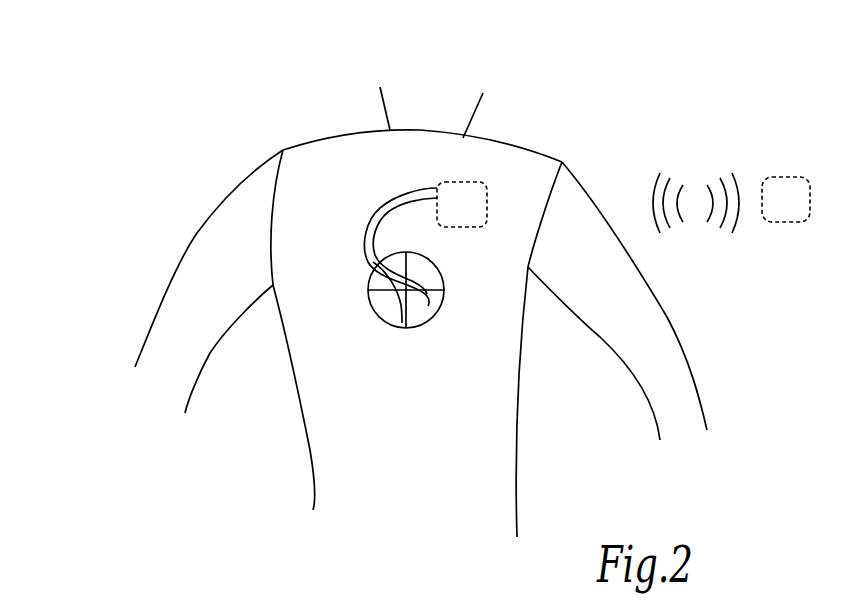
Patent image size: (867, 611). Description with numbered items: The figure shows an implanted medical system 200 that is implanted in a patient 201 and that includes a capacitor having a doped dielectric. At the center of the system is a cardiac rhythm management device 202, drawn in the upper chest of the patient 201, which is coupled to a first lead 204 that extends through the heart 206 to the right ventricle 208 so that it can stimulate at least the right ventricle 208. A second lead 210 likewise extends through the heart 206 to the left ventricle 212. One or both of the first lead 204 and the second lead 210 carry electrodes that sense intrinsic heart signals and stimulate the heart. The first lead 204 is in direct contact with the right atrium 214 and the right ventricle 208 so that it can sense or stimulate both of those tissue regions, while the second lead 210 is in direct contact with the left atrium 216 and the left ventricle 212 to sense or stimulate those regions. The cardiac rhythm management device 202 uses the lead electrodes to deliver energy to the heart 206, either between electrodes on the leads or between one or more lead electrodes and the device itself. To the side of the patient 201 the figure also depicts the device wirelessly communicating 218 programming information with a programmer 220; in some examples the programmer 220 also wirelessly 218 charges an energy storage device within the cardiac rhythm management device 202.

The implanted medical system 200 is at (128, 58).
The patient 201 is at (253, 172).
The cardiac rhythm management device 202 is at (478, 182).
The first lead 204 is at (362, 223).
The heart 206 is at (452, 248).
The right ventricle 208 is at (378, 314).
The second lead 210 is at (415, 190).
The left ventricle 212 is at (437, 318).
The right atrium 214 is at (368, 280).
The left atrium 216 is at (445, 277).
The wireless communication 218 is at (680, 177).
The programmer 220 is at (785, 177).